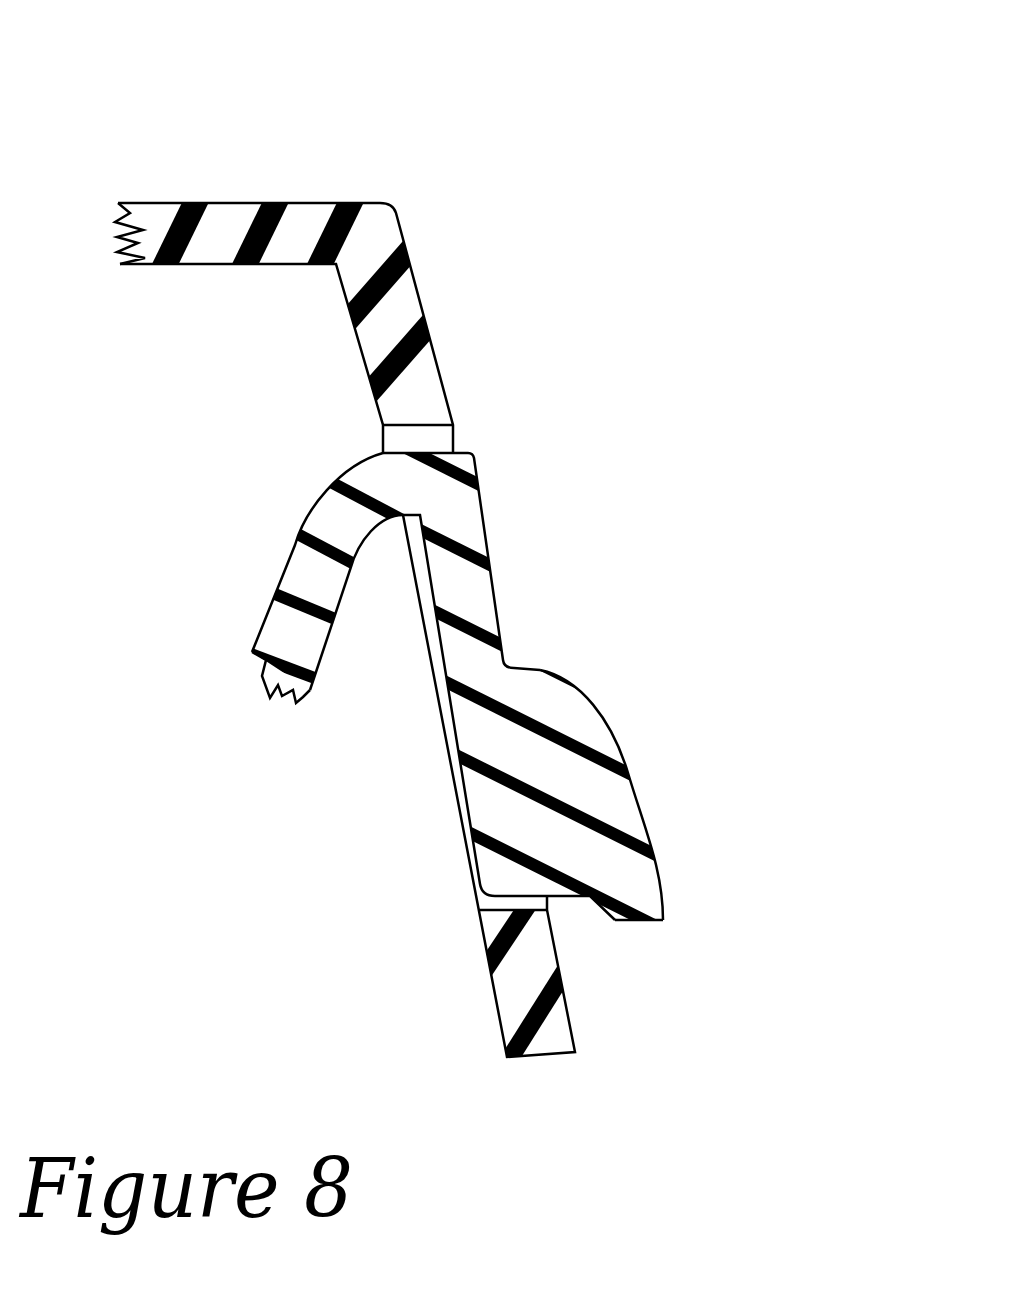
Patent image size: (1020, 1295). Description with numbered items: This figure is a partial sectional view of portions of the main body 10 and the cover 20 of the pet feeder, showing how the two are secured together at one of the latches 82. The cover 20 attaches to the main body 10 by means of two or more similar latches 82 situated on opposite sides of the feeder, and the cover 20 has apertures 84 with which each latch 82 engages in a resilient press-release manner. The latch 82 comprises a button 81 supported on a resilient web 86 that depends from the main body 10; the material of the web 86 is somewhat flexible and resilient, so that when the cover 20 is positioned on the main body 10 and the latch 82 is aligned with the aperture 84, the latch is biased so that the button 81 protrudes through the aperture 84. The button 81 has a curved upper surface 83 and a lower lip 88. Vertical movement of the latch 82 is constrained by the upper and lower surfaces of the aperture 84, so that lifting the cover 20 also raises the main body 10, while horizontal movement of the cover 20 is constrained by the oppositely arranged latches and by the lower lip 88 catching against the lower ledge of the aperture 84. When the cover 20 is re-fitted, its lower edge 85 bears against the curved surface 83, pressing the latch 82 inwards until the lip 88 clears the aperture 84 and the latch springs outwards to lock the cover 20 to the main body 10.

The main body 10 is at (443, 495).
The cover 20 is at (310, 223).
The button 81 is at (615, 858).
The latch 82 is at (613, 812).
The curved upper surface 83 is at (570, 715).
The aperture 84 is at (450, 433).
The lower edge 85 is at (548, 1053).
The resilient web 86 is at (467, 588).
The lower lip 88 is at (627, 868).